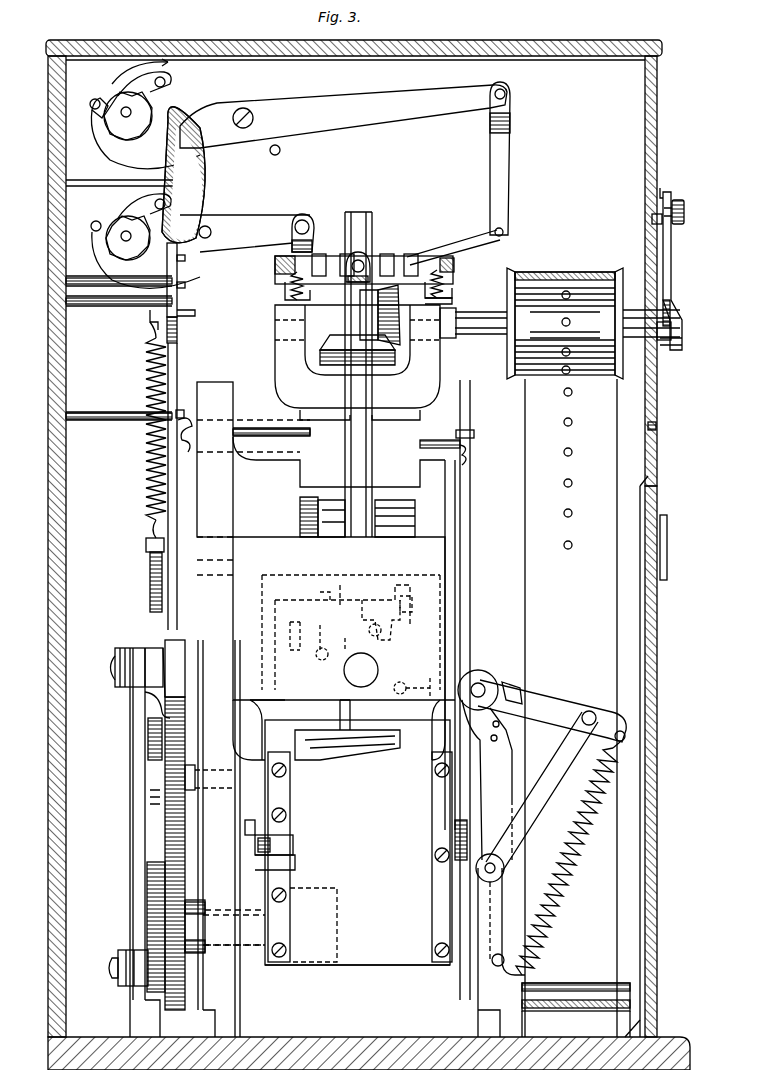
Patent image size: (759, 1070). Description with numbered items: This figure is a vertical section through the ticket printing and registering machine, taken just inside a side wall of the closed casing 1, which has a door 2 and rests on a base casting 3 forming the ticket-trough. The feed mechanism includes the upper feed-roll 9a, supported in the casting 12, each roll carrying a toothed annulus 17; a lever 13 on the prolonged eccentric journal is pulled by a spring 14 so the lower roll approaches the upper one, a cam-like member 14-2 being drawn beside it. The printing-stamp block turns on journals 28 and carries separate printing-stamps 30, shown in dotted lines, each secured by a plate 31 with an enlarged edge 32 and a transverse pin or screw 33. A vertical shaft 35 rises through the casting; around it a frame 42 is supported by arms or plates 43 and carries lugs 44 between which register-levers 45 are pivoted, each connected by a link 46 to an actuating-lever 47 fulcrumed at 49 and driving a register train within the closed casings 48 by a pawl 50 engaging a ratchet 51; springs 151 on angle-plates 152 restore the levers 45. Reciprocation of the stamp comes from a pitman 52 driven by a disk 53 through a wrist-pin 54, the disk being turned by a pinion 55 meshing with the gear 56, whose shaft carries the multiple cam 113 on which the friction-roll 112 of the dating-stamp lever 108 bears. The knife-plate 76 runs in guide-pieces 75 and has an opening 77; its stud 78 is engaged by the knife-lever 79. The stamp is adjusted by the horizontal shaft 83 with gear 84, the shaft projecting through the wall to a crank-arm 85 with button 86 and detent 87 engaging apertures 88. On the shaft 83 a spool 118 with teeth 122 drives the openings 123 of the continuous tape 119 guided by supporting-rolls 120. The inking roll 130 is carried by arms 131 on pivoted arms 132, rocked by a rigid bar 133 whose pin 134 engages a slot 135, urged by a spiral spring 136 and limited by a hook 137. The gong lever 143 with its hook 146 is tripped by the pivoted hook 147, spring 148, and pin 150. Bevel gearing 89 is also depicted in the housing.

The closed casing 1 is at (50, 458).
The door 2 is at (658, 797).
The casting 3 is at (369, 1017).
The upper feed-roll 9a is at (395, 518).
The casting 12 is at (328, 541).
The lever 13 is at (466, 566).
The spring 14 is at (472, 450).
The cam 14-2 is at (200, 175).
The toothed annulus 17 is at (322, 512).
The journals 28 is at (360, 660).
The printing-stamp 30 is at (380, 588).
The plate 31 is at (350, 596).
The enlarged edge 32 is at (320, 592).
The pin or screw 33 is at (412, 603).
The vertical shaft 35 is at (370, 440).
The frame 42 is at (276, 276).
The arms or plates 43 is at (352, 282).
The lugs 44 is at (314, 240).
The lever 45 is at (460, 250).
The link 46 is at (511, 159).
The actuating-lever 47 is at (343, 168).
The closed casings 48 is at (320, 156).
The fulcrum 49 is at (243, 108).
The pawls 50 is at (96, 100).
The ratchets 51 is at (128, 176).
The pitman 52 is at (130, 806).
The disk 53 is at (150, 996).
The wrist-pin 54 is at (118, 970).
The pinion 55 is at (147, 876).
The gear 56 is at (165, 848).
The guide-pieces 75 is at (290, 802).
The knife-plate 76 is at (341, 832).
The opening 77 is at (290, 916).
The stud 78 is at (275, 852).
The lever 79 is at (249, 824).
The horizontal shaft 83 is at (490, 364).
The gear 84 is at (389, 315).
The crank-arm 85 is at (670, 262).
The button 86 is at (685, 212).
The detent 87 is at (652, 238).
The apertures 88 is at (656, 427).
The bevel gear housing 89 is at (357, 356).
The lever 108 is at (150, 566).
The friction-roll 112 is at (148, 760).
The multiple cam 113 is at (152, 782).
The spool 118 is at (565, 323).
The continuous tape 119 is at (571, 708).
The supporting-rolls 120 is at (581, 1001).
The points or teeth 122 is at (570, 322).
The openings 123 is at (572, 422).
The inking roll 130 is at (482, 674).
The arms 131 is at (552, 711).
The pivotally-mounted arms or strips 132 is at (542, 792).
The rigid bar 133 is at (489, 780).
The pin 134 is at (500, 952).
The slot 135 is at (506, 880).
The spiral spring 136 is at (575, 848).
The hook 137 is at (520, 690).
The lever 143 is at (180, 298).
The hook 146 is at (178, 326).
The hook 147 is at (175, 430).
The spring 148 is at (192, 450).
The pin 150 is at (119, 408).
The springs 151 is at (445, 284).
The angle-plates 152 is at (445, 298).